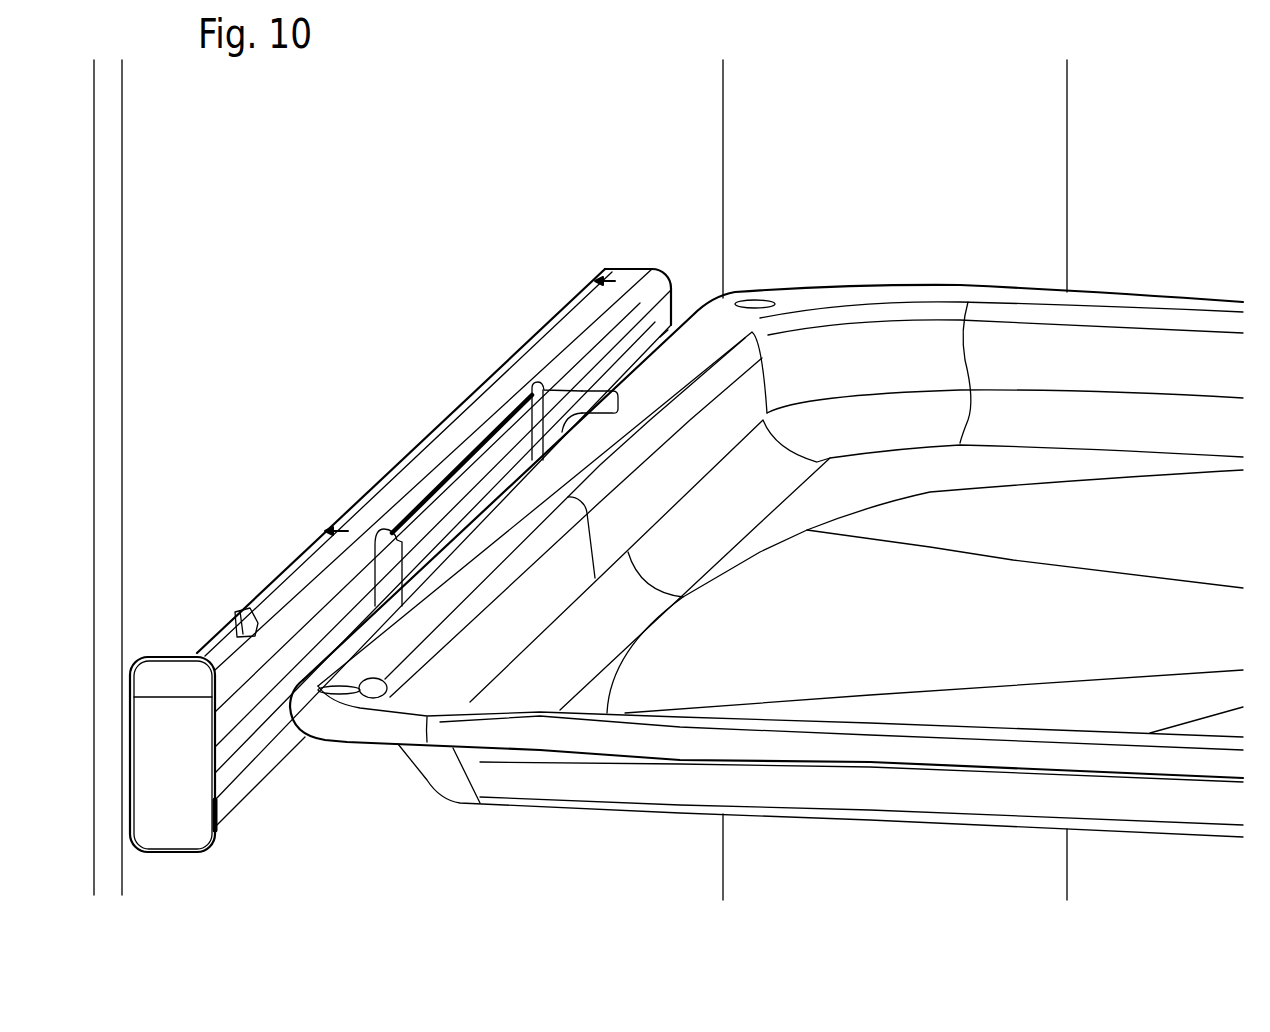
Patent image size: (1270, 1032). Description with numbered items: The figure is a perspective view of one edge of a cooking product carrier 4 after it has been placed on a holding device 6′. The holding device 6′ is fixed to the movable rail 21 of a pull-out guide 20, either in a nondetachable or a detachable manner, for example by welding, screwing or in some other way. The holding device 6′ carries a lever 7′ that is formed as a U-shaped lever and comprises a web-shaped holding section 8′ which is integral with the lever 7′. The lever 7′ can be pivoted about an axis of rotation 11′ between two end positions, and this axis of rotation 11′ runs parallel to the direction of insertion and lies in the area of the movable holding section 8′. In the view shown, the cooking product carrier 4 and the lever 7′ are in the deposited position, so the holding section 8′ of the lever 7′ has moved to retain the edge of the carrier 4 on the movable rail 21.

The cooking product carrier 4 is at (743, 388).
The holding device 6′ is at (392, 413).
The lever 7′ is at (560, 402).
The holding section 8′ is at (605, 400).
The axis of rotation 11′ is at (482, 437).
The pull-out guide 20 is at (332, 807).
The movable rail 21 is at (290, 585).